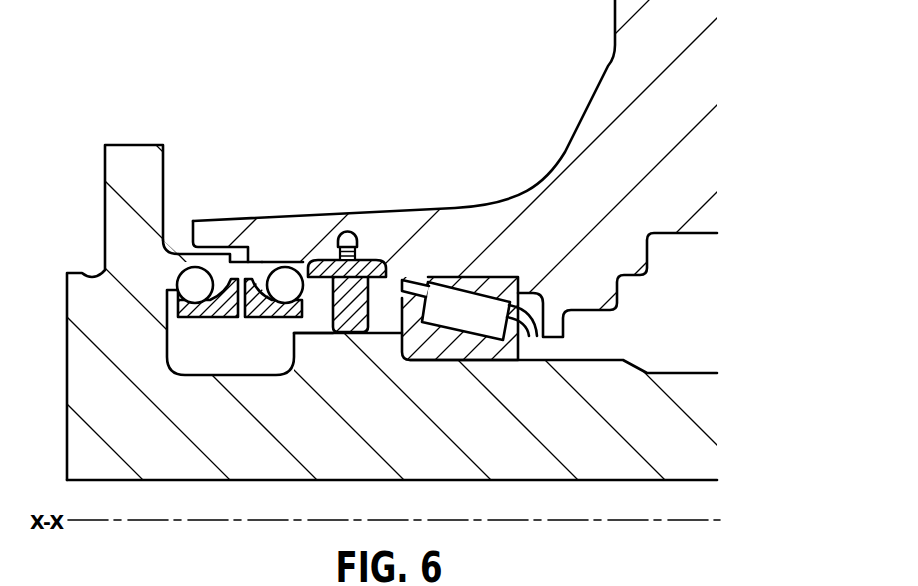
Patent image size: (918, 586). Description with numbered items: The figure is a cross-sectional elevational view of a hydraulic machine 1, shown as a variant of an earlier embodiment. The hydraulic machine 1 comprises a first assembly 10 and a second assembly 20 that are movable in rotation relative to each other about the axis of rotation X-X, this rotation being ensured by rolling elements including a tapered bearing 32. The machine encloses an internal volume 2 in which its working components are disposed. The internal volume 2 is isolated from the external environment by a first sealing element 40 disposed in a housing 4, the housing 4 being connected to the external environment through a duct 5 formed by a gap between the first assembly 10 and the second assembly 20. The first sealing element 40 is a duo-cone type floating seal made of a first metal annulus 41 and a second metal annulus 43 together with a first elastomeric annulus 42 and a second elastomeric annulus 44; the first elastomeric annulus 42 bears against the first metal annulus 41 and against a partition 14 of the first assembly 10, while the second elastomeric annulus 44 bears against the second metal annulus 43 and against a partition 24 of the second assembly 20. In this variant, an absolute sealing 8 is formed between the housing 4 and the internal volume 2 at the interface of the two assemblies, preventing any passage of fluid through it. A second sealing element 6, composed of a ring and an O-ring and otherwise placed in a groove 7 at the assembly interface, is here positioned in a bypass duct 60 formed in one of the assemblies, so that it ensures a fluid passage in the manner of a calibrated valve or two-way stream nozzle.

The hydraulic machine 1 is at (165, 89).
The internal volume 2 is at (651, 338).
The housing 4 is at (173, 334).
The duct 5 is at (213, 253).
The second sealing element 6 is at (350, 241).
The groove 7 is at (368, 219).
The absolute sealing 8 is at (350, 313).
The first assembly 10 is at (261, 227).
The partition 14 is at (292, 266).
The second assembly 20 is at (80, 317).
The partition 24 is at (182, 271).
The tapered bearing 32 is at (468, 323).
The first sealing element 40 is at (306, 293).
The first metal annulus 41 is at (263, 315).
The first elastomeric annulus 42 is at (288, 288).
The second metal annulus 43 is at (218, 310).
The second elastomeric annulus 44 is at (195, 288).
The bypass duct 60 is at (384, 265).